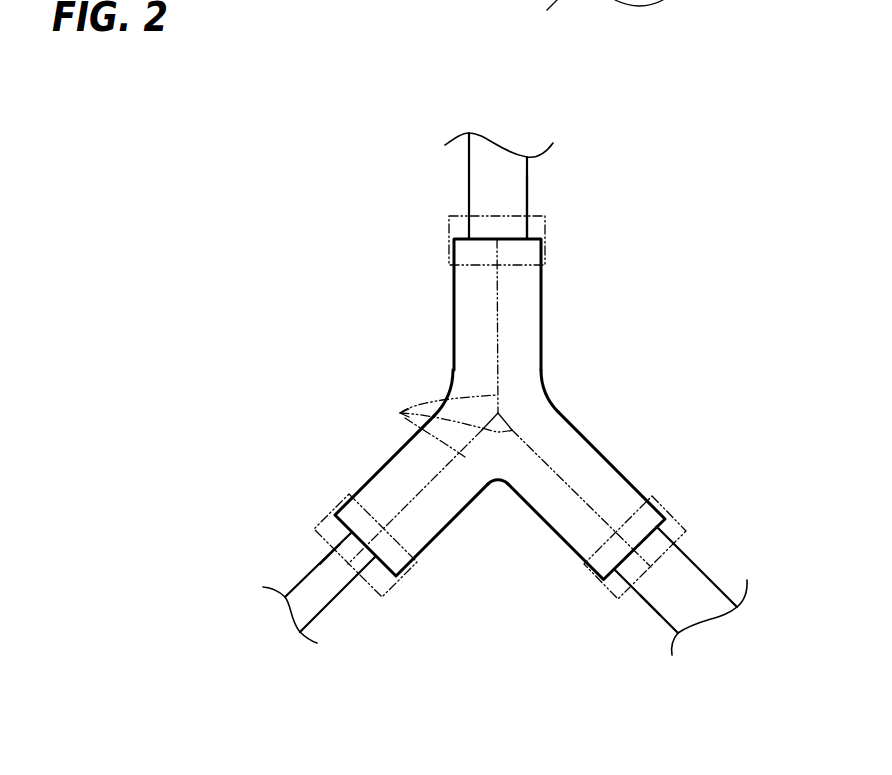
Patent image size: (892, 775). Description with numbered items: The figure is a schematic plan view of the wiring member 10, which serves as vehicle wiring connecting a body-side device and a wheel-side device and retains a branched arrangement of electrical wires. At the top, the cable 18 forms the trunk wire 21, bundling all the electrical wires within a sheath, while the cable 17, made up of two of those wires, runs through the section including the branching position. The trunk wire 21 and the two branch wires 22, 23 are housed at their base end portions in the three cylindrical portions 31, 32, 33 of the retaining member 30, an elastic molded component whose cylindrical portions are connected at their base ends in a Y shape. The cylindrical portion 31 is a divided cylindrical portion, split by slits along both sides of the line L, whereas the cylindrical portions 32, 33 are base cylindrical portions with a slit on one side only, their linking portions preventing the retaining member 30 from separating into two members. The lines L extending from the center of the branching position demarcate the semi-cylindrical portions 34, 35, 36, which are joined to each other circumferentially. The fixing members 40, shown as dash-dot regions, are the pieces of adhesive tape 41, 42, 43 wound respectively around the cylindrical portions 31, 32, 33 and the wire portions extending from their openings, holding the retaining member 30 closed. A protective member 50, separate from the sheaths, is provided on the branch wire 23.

The wiring member 10 is at (347, 91).
The cable 17 is at (312, 578).
The cable 18 is at (480, 186).
The trunk wire 21 is at (540, 187).
The branch wire 22 is at (335, 616).
The branch wire 23 is at (709, 562).
The retaining member 30 is at (392, 435).
The cylindrical portion 31 is at (542, 298).
The cylindrical portion 32 is at (440, 522).
The cylindrical portion 33 is at (555, 522).
The semi-cylindrical portion 34 is at (498, 472).
The semi-cylindrical portion 35 is at (463, 393).
The semi-cylindrical portion 36 is at (535, 403).
The fixing member 40 is at (537, 420).
The adhesive tape 41 is at (550, 238).
The adhesive tape 42 is at (397, 582).
The adhesive tape 43 is at (668, 512).
The protective member 50 is at (662, 608).